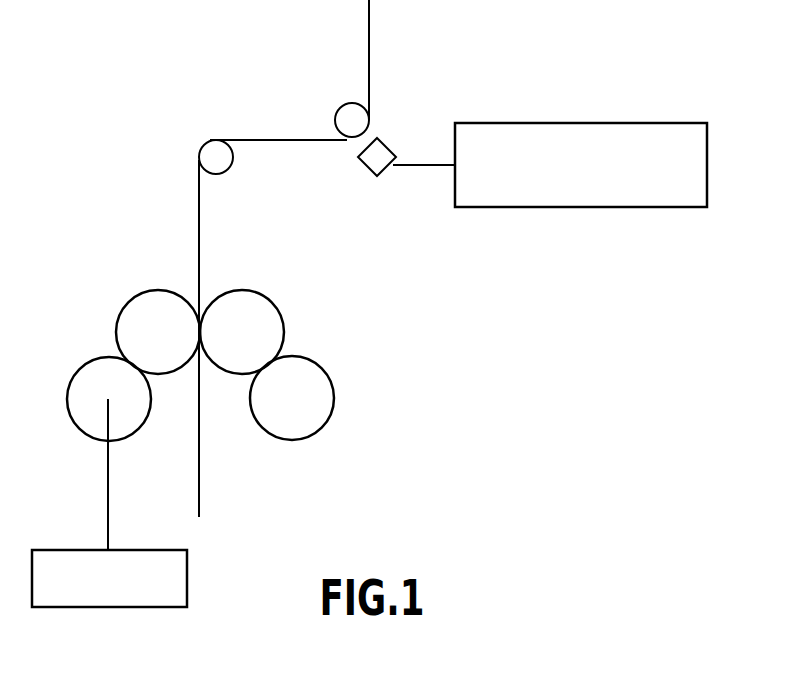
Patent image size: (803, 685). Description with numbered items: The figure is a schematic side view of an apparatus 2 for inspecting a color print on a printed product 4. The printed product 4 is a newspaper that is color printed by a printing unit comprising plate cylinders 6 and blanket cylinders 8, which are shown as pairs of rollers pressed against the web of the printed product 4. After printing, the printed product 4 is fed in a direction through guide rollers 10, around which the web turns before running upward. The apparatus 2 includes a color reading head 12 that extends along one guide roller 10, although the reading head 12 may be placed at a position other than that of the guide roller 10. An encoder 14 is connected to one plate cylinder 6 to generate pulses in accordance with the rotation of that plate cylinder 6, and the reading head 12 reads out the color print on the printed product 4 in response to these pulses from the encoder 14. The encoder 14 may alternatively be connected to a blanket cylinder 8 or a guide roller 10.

The apparatus 2 is at (597, 123).
The printed product 4 is at (197, 226).
The plate cylinder 6 is at (88, 440).
The blanket cylinder 8 is at (122, 305).
The guide roller 10 is at (353, 120).
The color reading head 12 is at (392, 148).
The encoder 14 is at (92, 607).